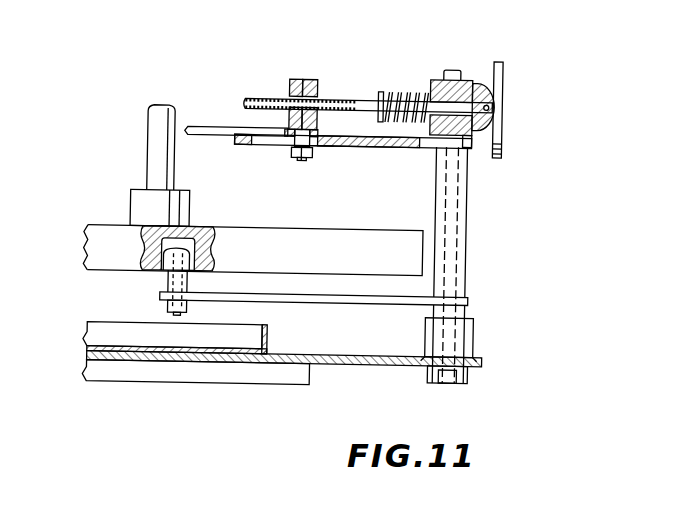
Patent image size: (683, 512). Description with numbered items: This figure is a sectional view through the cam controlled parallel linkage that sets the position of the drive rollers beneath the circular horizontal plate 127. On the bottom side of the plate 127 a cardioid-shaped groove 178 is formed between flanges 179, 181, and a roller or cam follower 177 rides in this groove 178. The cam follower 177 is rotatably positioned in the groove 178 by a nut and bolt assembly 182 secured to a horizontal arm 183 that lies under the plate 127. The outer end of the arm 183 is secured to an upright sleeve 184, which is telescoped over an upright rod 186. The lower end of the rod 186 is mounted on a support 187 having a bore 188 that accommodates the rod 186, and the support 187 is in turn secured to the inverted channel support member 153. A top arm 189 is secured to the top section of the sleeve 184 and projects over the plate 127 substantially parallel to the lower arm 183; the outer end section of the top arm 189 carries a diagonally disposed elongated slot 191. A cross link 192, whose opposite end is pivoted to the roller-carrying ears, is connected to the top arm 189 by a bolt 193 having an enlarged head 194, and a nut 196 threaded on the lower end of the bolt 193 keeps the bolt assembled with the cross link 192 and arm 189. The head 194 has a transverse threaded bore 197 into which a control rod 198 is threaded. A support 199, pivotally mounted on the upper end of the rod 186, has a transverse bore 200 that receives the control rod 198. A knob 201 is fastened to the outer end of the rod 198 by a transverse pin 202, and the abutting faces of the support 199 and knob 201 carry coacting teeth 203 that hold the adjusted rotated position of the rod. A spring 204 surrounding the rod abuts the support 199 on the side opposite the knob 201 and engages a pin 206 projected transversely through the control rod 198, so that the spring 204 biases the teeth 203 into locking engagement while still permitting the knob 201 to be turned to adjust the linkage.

The horizontal plate 127 is at (345, 232).
The inverted channel support member 153 is at (363, 362).
The cam follower 177 is at (166, 270).
The groove 178 is at (191, 228).
The flange 179 is at (144, 256).
The flange 181 is at (198, 270).
The nut and bolt assembly 182 is at (181, 310).
The horizontal arm 183 is at (307, 299).
The upright sleeve 184 is at (467, 216).
The upright rod 186 is at (450, 68).
The support 187 is at (477, 333).
The bore 188 is at (454, 383).
The top arm 189 is at (380, 146).
The elongated slot 191 is at (328, 146).
The cross link 192 is at (208, 130).
The bolt 193 is at (316, 137).
The enlarged head 194 is at (310, 80).
The nut 196 is at (292, 160).
The transverse threaded bore 197 is at (303, 80).
The control rod 198 is at (336, 100).
The support 199 is at (429, 78).
The transverse bore 200 is at (449, 113).
The knob 201 is at (500, 65).
The transverse pin 202 is at (487, 105).
The coacting teeth 203 is at (474, 90).
The spring 204 is at (410, 89).
The pin 206 is at (377, 91).